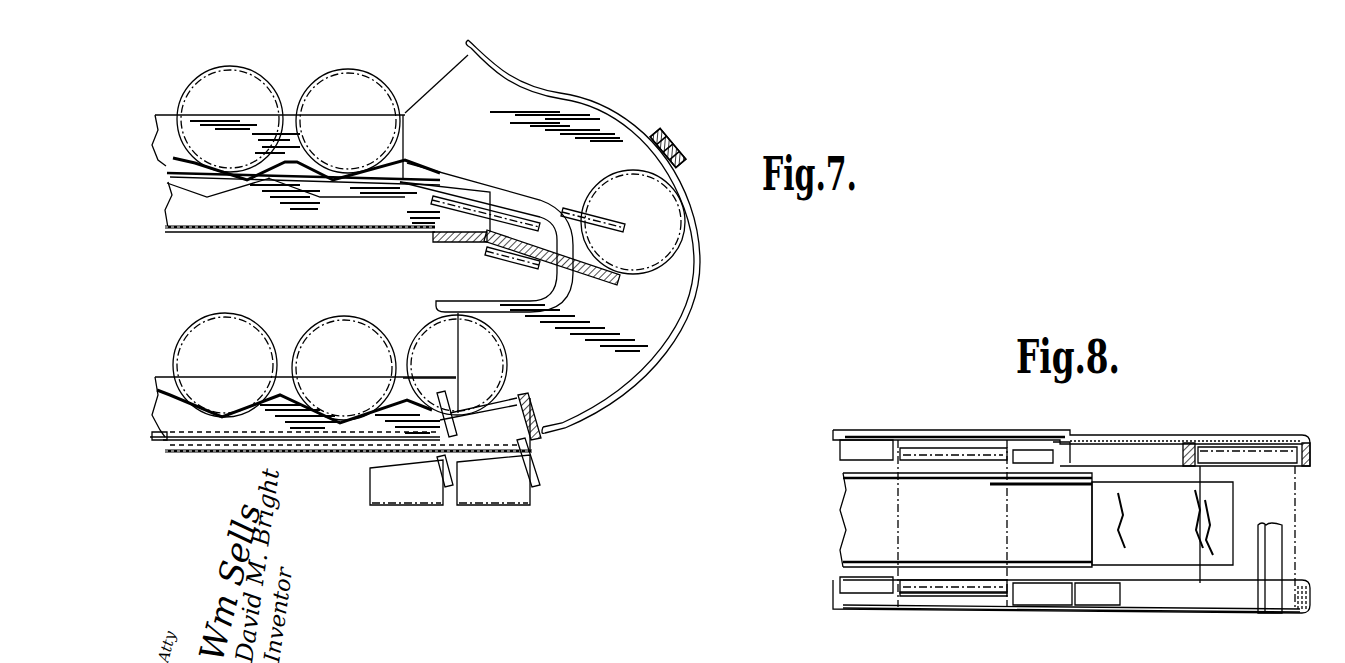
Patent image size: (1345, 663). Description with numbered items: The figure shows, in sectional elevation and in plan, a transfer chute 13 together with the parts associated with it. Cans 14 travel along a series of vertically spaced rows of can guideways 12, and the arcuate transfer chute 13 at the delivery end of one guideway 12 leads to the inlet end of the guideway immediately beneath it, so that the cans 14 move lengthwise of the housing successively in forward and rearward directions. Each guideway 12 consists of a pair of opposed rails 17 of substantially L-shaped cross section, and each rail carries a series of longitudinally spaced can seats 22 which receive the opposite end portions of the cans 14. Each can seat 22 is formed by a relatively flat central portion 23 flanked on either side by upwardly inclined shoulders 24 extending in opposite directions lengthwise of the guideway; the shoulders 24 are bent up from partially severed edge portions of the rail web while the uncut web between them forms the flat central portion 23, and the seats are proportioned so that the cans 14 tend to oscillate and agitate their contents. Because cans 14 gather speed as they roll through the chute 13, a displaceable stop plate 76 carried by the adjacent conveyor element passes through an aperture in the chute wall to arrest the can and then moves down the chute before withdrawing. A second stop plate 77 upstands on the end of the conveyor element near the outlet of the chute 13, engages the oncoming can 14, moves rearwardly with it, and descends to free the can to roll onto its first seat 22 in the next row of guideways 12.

In FIG. 7, the can guideway 12 is at (230, 104).
In FIG. 8, the can guideway 12 is at (918, 430).
In FIG. 7, the transfer chute 13 is at (697, 313).
In FIG. 8, the transfer chute 13 is at (1190, 438).
In FIG. 7, the can 14 is at (345, 92).
In FIG. 8, the can 14 is at (905, 520).
In FIG. 7, the rail 17 is at (200, 132).
In FIG. 8, the rail 17 is at (850, 445).
In FIG. 7, the can seat 22 is at (318, 190).
In FIG. 8, the can seat 22 is at (950, 590).
In FIG. 7, the flat central portion 23 is at (217, 175).
In FIG. 8, the flat central portion 23 is at (940, 585).
In FIG. 7, the upwardly inclined shoulder 24 is at (248, 170).
In FIG. 8, the upwardly inclined shoulder 24 is at (990, 452).
In FIG. 7, the stop plate 76 is at (593, 273).
In FIG. 8, the stop plate 76 is at (1165, 550).
In FIG. 7, the second stop plate 77 is at (530, 400).